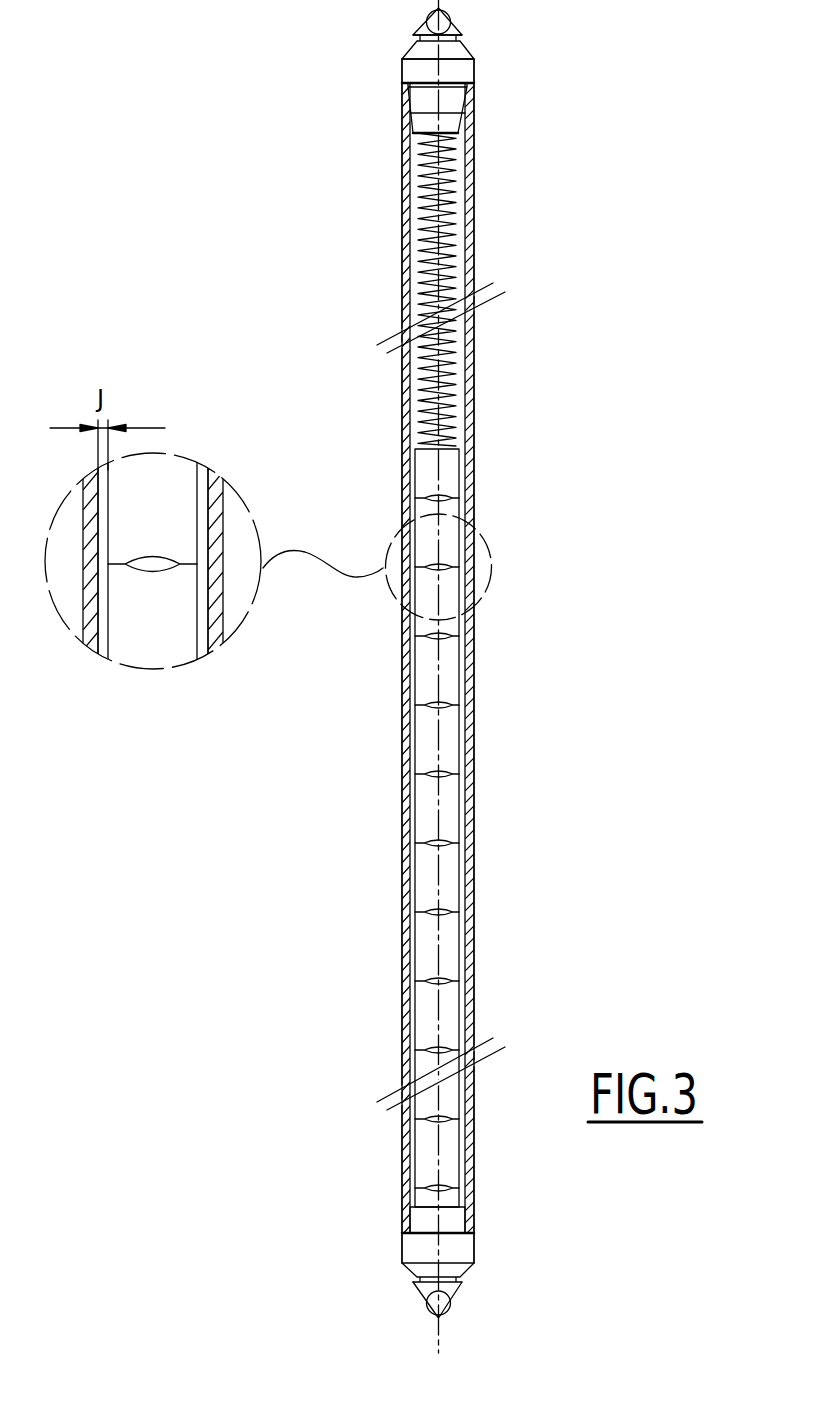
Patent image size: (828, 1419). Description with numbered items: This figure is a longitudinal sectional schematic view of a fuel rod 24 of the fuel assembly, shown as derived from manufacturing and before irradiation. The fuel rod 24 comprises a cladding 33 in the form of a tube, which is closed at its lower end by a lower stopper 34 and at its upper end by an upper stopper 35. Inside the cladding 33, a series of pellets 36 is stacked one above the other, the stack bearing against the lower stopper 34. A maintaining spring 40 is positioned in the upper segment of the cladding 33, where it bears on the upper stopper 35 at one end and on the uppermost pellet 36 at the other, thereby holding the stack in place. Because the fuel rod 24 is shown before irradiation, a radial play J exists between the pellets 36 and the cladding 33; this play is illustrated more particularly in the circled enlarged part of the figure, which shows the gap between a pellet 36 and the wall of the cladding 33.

The fuel rod 24 is at (490, 475).
The cladding 33 is at (470, 890).
The lower stopper 34 is at (457, 1252).
The upper stopper 35 is at (457, 74).
The pellets 36 is at (500, 730).
The maintaining spring 40 is at (450, 270).